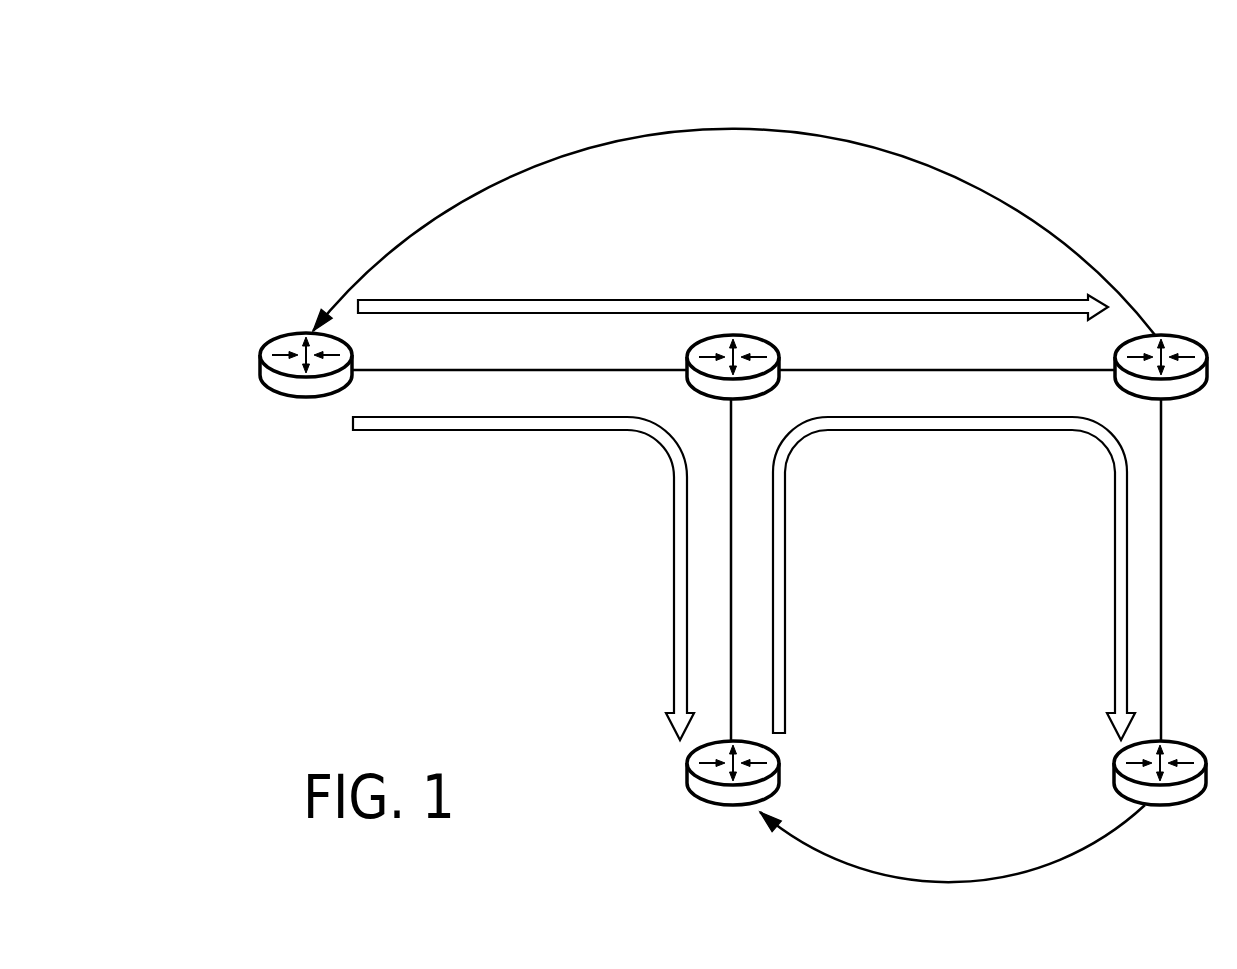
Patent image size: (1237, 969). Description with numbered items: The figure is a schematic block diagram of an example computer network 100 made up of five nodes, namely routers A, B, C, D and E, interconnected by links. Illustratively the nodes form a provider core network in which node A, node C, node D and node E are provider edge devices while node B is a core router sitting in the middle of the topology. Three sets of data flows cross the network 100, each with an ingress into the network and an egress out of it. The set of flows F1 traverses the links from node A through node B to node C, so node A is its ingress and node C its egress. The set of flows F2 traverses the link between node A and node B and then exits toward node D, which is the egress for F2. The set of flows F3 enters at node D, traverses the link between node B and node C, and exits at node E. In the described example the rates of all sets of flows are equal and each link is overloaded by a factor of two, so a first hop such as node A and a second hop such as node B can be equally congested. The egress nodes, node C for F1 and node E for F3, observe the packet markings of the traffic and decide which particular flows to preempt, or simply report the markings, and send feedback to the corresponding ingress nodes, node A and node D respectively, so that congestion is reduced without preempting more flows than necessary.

The computer network 100 is at (402, 128).
The node A is at (284, 397).
The node B is at (693, 345).
The node C is at (1200, 392).
The node D is at (708, 806).
The node E is at (1197, 806).
The set of flows F1 is at (522, 298).
The set of flows F2 is at (480, 432).
The set of flows F3 is at (945, 432).